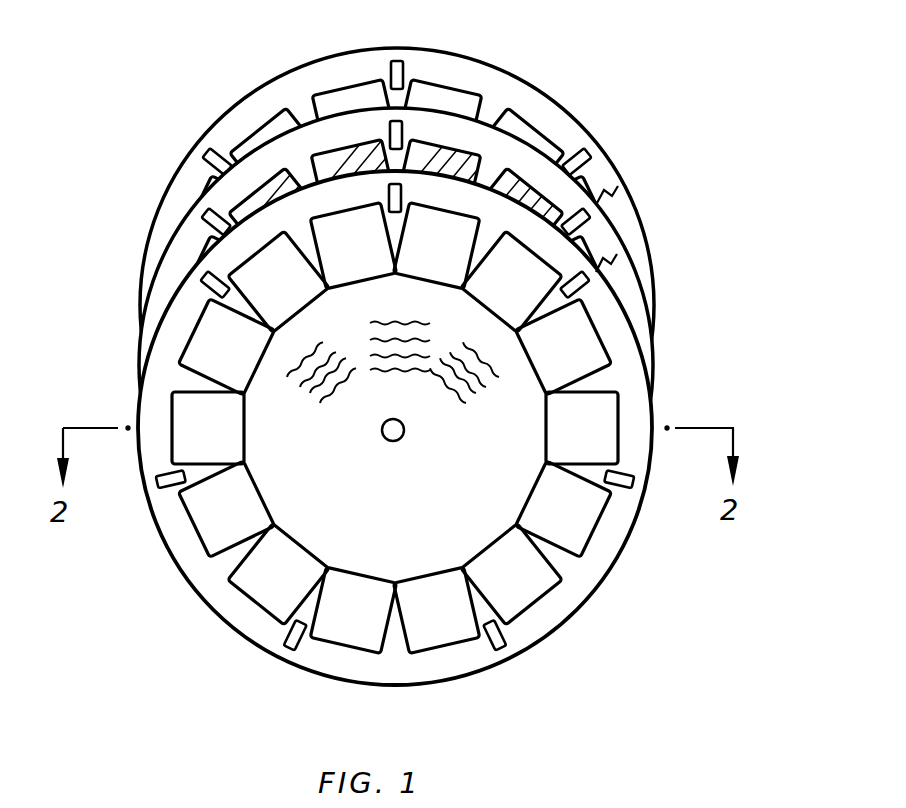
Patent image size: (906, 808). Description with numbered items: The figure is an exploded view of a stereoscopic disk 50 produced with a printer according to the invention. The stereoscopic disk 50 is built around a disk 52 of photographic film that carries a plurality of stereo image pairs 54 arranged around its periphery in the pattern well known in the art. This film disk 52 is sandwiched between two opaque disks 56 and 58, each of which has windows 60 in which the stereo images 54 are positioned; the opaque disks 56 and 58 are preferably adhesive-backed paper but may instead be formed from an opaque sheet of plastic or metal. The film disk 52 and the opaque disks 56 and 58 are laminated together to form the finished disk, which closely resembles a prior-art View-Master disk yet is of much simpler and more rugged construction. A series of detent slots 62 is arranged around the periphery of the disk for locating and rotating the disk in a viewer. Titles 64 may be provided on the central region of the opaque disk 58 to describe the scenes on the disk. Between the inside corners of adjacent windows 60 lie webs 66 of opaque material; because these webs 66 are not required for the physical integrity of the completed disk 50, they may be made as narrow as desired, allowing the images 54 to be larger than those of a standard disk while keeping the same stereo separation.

The stereoscopic disk 50 is at (703, 44).
The disk of photographic film 52 is at (140, 352).
The stereo image pairs 54 is at (523, 187).
The opaque disk 56 is at (148, 240).
The opaque disk 58 is at (168, 556).
The windows 60 is at (333, 93).
The detent slots 62 is at (598, 270).
The titles 64 is at (500, 364).
The webs 66 is at (400, 226).